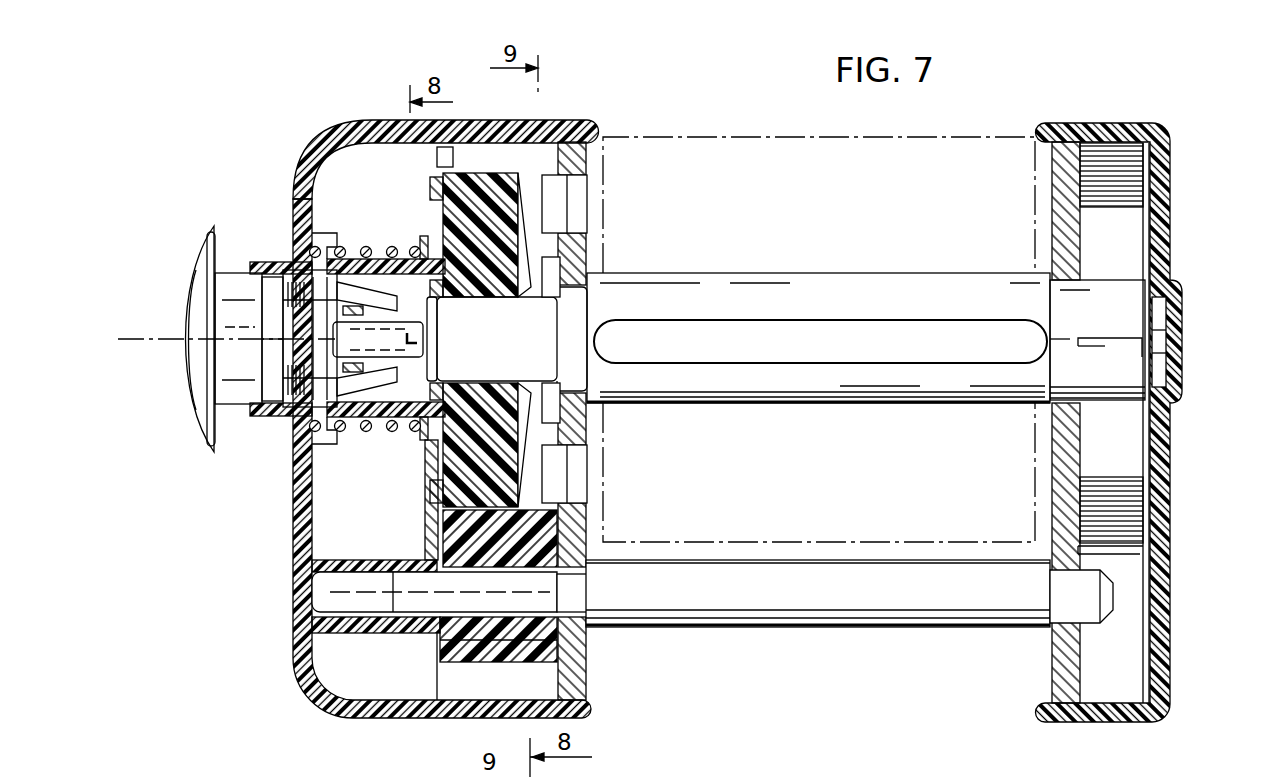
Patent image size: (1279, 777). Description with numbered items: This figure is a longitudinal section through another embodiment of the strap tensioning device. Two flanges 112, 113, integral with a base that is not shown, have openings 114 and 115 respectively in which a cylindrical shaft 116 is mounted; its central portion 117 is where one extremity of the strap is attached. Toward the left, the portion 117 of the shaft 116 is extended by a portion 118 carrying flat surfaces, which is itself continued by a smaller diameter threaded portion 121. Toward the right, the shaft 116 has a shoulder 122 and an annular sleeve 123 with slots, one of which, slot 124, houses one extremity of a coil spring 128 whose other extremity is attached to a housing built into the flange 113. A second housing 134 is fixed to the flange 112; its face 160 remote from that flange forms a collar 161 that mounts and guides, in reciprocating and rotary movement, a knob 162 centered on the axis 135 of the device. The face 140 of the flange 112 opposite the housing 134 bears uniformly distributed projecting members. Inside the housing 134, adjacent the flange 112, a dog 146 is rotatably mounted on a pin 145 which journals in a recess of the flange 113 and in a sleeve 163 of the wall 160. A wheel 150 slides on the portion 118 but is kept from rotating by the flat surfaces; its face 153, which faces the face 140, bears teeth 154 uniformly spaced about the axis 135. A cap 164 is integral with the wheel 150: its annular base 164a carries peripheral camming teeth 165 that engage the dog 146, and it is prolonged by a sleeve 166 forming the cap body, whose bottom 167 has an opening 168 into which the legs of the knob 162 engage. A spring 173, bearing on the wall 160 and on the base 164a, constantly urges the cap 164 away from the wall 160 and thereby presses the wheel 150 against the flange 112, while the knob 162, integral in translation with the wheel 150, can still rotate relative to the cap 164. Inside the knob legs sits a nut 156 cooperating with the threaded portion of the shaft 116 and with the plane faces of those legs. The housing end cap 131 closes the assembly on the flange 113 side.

The flange 112 is at (570, 665).
The flange 113 is at (1066, 660).
The opening 114 is at (597, 403).
The opening 115 is at (1045, 408).
The cylindrical shaft 116 is at (880, 268).
The central portion 117 is at (767, 380).
The portion 118 is at (502, 358).
The threaded portion 121 is at (416, 345).
The shoulder 122 is at (1055, 277).
The annular sleeve 123 is at (1098, 372).
The slot 124 is at (1113, 340).
The coil spring 128 is at (1130, 494).
The housing end cap 131 is at (1160, 573).
The second housing 134 is at (323, 130).
The axis 135 is at (137, 337).
The face 140 is at (548, 168).
The pin 145 is at (797, 592).
The dog 146 is at (487, 643).
The wheel 150 is at (483, 190).
The face 153 is at (518, 207).
The teeth 154 is at (524, 247).
The nut 156 is at (330, 312).
The face 160 is at (300, 486).
The collar 161 is at (205, 436).
The knob 162 is at (228, 247).
The sleeve 163 is at (318, 636).
The cap 164 is at (370, 247).
The annular base 164a is at (428, 480).
The camming teeth 165 is at (452, 150).
The sleeve 166 is at (357, 422).
The bottom 167 is at (290, 417).
The opening 168 is at (195, 378).
The spring 173 is at (389, 250).